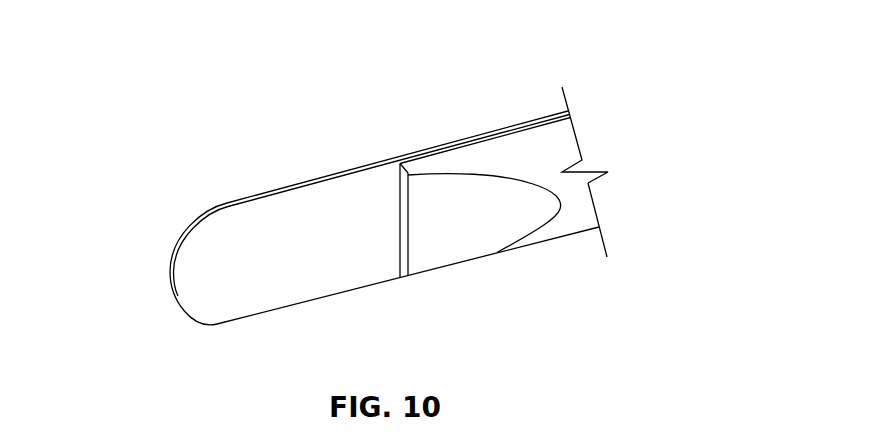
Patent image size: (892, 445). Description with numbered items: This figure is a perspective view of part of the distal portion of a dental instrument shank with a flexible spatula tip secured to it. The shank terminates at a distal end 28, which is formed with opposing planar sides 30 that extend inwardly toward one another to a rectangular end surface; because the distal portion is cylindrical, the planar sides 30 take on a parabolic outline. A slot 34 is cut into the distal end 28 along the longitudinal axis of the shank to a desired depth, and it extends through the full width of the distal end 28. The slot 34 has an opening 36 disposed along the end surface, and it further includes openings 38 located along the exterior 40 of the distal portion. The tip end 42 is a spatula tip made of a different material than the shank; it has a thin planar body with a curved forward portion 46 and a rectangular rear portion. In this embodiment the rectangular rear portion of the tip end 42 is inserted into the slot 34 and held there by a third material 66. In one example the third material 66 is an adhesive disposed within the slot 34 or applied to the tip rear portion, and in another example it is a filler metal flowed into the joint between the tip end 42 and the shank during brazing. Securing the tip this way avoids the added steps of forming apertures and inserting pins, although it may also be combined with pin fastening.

The distal end 28 is at (530, 140).
The planar sides 30 is at (453, 217).
The slot 34 is at (398, 255).
The opening 36 is at (400, 188).
The openings 38 is at (466, 137).
The exterior 40 is at (567, 213).
The tip end 42 is at (242, 218).
The curved forward portion 46 is at (195, 297).
The third material 66 is at (510, 137).